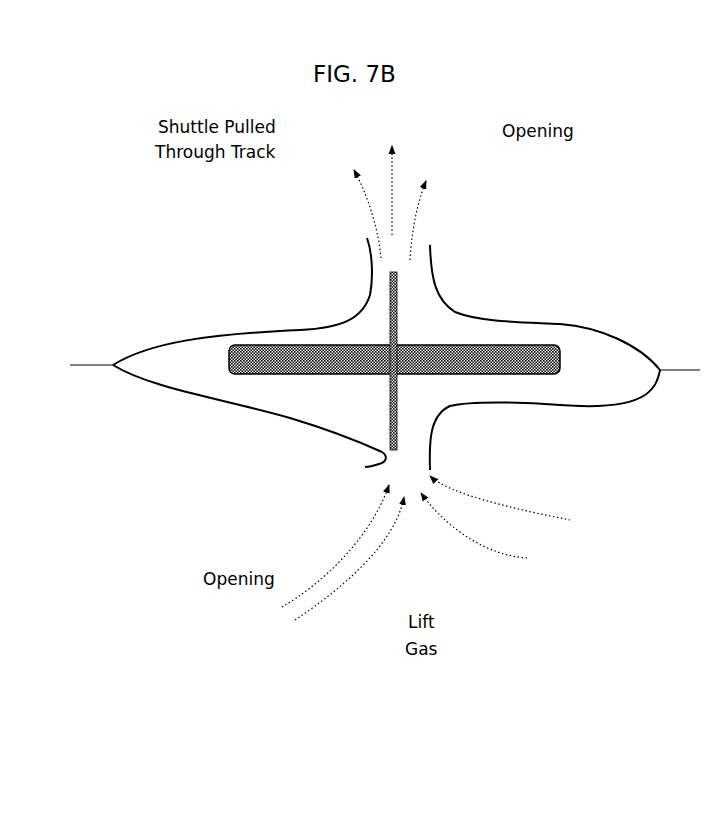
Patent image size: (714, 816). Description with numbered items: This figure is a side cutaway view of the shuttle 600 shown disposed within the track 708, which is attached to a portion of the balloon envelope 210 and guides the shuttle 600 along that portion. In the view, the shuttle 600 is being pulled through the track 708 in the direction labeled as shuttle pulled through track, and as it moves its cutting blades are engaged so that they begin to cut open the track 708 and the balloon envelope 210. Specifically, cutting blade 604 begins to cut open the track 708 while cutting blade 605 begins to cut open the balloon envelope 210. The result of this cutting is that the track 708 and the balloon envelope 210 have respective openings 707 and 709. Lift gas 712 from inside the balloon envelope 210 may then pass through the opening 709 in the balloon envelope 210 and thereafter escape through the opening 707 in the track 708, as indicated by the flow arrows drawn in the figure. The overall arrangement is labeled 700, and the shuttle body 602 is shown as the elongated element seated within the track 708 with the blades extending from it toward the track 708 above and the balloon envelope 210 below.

The shuttle track system 700 is at (627, 68).
The shuttle 600 is at (511, 213).
The shuttle 602 is at (232, 350).
The cutting blade 604 is at (392, 305).
The cutting blade 605 is at (386, 425).
The opening 707 is at (430, 248).
The track 708 is at (320, 323).
The opening 709 is at (376, 469).
The lift gas 712 is at (382, 558).
The balloon envelope 210 is at (228, 405).